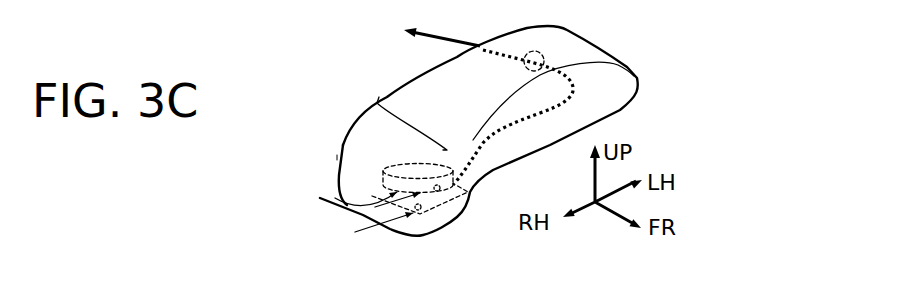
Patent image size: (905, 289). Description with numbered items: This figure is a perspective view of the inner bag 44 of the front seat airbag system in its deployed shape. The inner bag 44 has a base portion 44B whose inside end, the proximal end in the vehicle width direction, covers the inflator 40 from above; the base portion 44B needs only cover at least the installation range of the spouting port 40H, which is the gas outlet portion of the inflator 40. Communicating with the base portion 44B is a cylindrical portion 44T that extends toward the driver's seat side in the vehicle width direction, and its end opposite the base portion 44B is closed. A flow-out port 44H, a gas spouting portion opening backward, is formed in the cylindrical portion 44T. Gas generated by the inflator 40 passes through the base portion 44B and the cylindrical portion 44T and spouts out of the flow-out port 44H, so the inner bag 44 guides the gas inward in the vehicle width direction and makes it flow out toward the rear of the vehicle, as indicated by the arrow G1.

The inner bag 44 is at (643, 76).
The cylindrical portion 44T is at (422, 92).
The base portion 44B is at (355, 163).
The flow-out port 44H is at (541, 53).
The inflator 40 is at (385, 232).
The spouting port 40H is at (335, 198).
The arrow G1 is at (471, 100).